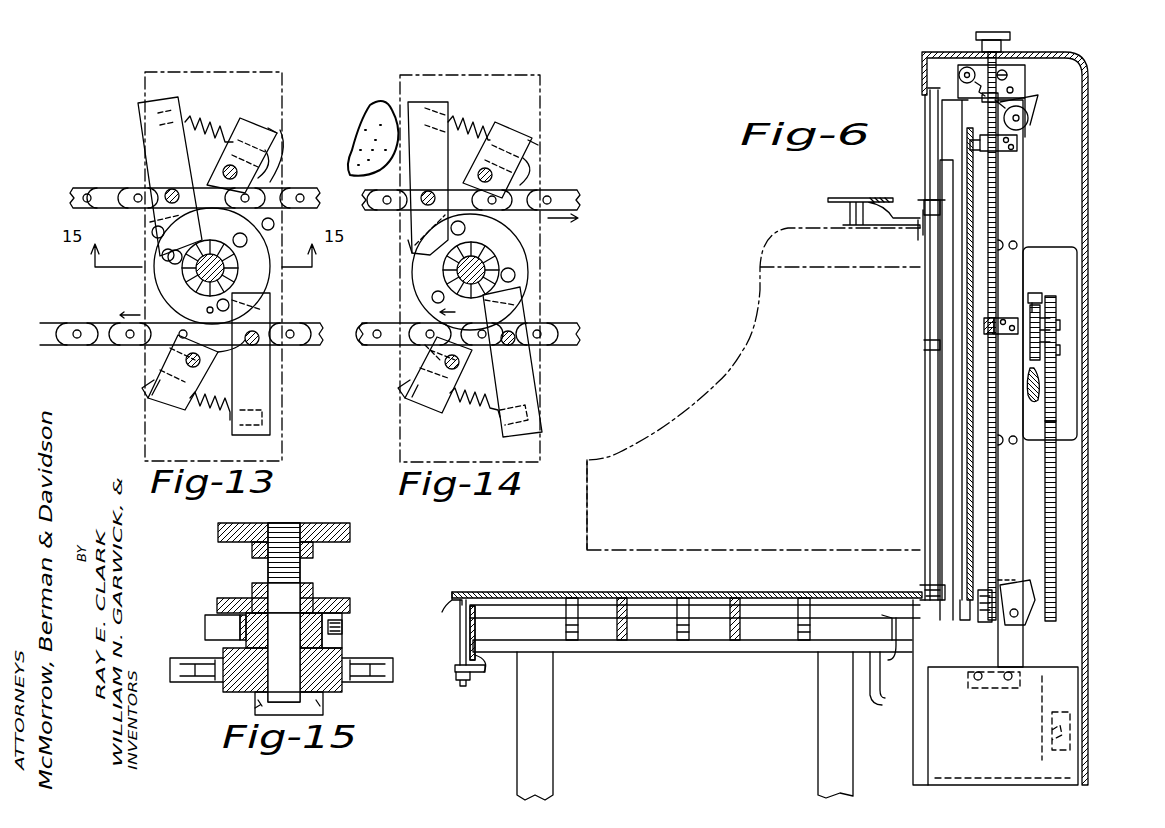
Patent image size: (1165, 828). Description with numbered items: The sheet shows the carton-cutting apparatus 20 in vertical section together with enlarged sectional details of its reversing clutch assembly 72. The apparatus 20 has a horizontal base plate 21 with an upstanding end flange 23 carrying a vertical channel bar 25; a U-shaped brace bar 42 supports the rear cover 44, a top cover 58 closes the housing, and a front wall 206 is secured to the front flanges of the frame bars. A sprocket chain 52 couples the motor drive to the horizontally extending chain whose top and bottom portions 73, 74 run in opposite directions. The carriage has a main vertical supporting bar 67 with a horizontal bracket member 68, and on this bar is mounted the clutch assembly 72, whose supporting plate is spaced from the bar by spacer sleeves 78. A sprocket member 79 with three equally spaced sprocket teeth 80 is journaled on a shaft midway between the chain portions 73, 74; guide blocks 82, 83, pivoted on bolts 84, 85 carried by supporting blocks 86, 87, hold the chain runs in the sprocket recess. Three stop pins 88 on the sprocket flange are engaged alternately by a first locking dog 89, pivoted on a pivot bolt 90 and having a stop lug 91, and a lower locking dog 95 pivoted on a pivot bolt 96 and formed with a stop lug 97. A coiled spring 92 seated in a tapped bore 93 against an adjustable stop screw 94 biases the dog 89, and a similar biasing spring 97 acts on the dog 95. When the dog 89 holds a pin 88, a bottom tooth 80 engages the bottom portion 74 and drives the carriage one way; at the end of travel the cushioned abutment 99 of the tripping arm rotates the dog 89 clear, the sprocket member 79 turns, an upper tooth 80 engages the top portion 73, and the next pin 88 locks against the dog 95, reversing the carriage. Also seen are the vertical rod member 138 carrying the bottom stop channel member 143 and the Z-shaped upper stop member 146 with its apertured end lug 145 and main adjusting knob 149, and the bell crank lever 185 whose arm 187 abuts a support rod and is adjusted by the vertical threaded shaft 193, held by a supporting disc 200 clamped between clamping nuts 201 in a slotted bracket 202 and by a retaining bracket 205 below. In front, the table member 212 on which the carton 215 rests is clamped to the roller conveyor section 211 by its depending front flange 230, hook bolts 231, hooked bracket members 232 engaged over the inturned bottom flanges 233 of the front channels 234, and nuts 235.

In FIG. 6, the carton-cutting apparatus 20 is at (1102, 151).
In FIG. 6, the horizontal base plate 21 is at (1005, 785).
In FIG. 6, the upstanding vertical flange 23 is at (930, 755).
In FIG. 6, the vertical channel bar 25 is at (1018, 187).
In FIG. 6, the vertical brace bar 42 is at (1077, 262).
In FIG. 6, the vertical rear cover 44 is at (1088, 210).
In FIG. 6, the sprocket chain 52 is at (1056, 510).
In FIG. 6, the top cover 58 is at (1018, 55).
In FIG. 15, the main vertical supporting bar 67 is at (325, 522).
In FIG. 15, the horizontal bracket member 68 is at (340, 590).
In FIG. 13, the reversing clutch assembly 72 is at (124, 161).
In FIG. 14, the reversing clutch assembly 72 is at (556, 112).
In FIG. 6, the reversing clutch assembly 72 is at (1048, 312).
In FIG. 13, the top portion of sprocket chain 73 is at (300, 194).
In FIG. 14, the top portion of sprocket chain 73 is at (558, 192).
In FIG. 15, the top portion of sprocket chain 73 is at (368, 685).
In FIG. 13, the bottom portion of sprocket chain 74 is at (300, 345).
In FIG. 14, the bottom portion of sprocket chain 74 is at (570, 340).
In FIG. 13, the spacer sleeve 78 is at (198, 290).
In FIG. 14, the spacer sleeve 78 is at (455, 272).
In FIG. 15, the spacer sleeve 78 is at (320, 600).
In FIG. 13, the sprocket member 79 is at (160, 278).
In FIG. 14, the sprocket member 79 is at (470, 272).
In FIG. 15, the sprocket member 79 is at (215, 692).
In FIG. 13, the sprocket teeth 80 is at (150, 235).
In FIG. 13, the upper guide block 82 is at (272, 170).
In FIG. 14, the upper guide block 82 is at (540, 150).
In FIG. 13, the lower guide block 83 is at (222, 365).
In FIG. 13, the horizontal supporting bolt 84 is at (225, 165).
In FIG. 14, the horizontal supporting bolt 84 is at (485, 175).
In FIG. 13, the horizontal supporting bolt 85 is at (185, 367).
In FIG. 14, the horizontal supporting bolt 85 is at (445, 368).
In FIG. 13, the upper supporting block 86 is at (250, 122).
In FIG. 14, the upper supporting block 86 is at (512, 138).
In FIG. 15, the upper supporting block 86 is at (345, 638).
In FIG. 13, the lower supporting block 87 is at (162, 408).
In FIG. 14, the lower supporting block 87 is at (418, 408).
In FIG. 13, the stop pin 88 is at (243, 244).
In FIG. 14, the stop pin 88 is at (466, 228).
In FIG. 15, the stop pin 88 is at (240, 598).
In FIG. 13, the first locking dog 89 is at (145, 120).
In FIG. 14, the first locking dog 89 is at (425, 105).
In FIG. 15, the first locking dog 89 is at (205, 625).
In FIG. 13, the pivot bolt 90 is at (172, 188).
In FIG. 14, the pivot bolt 90 is at (428, 198).
In FIG. 13, the stop lug 91 is at (162, 255).
In FIG. 14, the stop lug 91 is at (410, 255).
In FIG. 13, the coiled spring 92 is at (190, 115).
In FIG. 14, the coiled spring 92 is at (478, 122).
In FIG. 13, the tapped bore 93 is at (250, 175).
In FIG. 13, the stop screw 94 is at (275, 148).
In FIG. 15, the stop screw 94 is at (345, 625).
In FIG. 13, the lower locking dog 95 is at (270, 404).
In FIG. 14, the lower locking dog 95 is at (525, 380).
In FIG. 13, the pivot bolt 96 is at (258, 334).
In FIG. 14, the pivot bolt 96 is at (515, 333).
In FIG. 13, the biasing spring 97 is at (228, 420).
In FIG. 14, the biasing spring 97 is at (470, 415).
In FIG. 14, the cushioned abutment end portion 99 is at (390, 110).
In FIG. 6, the vertical rod member 138 is at (938, 488).
In FIG. 6, the rearwardly facing channel member 143 is at (920, 590).
In FIG. 6, the apertured end lug 145 is at (930, 205).
In FIG. 6, the upper stop member 146 is at (918, 240).
In FIG. 6, the main adjusting knob 149 is at (843, 196).
In FIG. 6, the bell crank lever 185 is at (1000, 622).
In FIG. 6, the upwardly extending arm 187 is at (1035, 588).
In FIG. 6, the vertical threaded shaft 193 is at (998, 495).
In FIG. 6, the supporting disc 200 is at (1017, 152).
In FIG. 6, the clamping nut 201 is at (980, 135).
In FIG. 6, the slotted bracket 202 is at (1030, 128).
In FIG. 6, the retaining bracket 205 is at (1002, 310).
In FIG. 6, the vertical front wall 206 is at (967, 412).
In FIG. 6, the roller conveyor section 211 is at (565, 592).
In FIG. 6, the table member 212 is at (620, 595).
In FIG. 6, the carton 215 is at (587, 510).
In FIG. 6, the depending front flange 230 is at (452, 598).
In FIG. 6, the hook bolt 231 is at (458, 638).
In FIG. 6, the hooked bracket member 232 is at (485, 680).
In FIG. 6, the inturned bottom flange 233 is at (878, 692).
In FIG. 6, the front longitudinal vertical channel 234 is at (478, 628).
In FIG. 6, the nut 235 is at (458, 688).